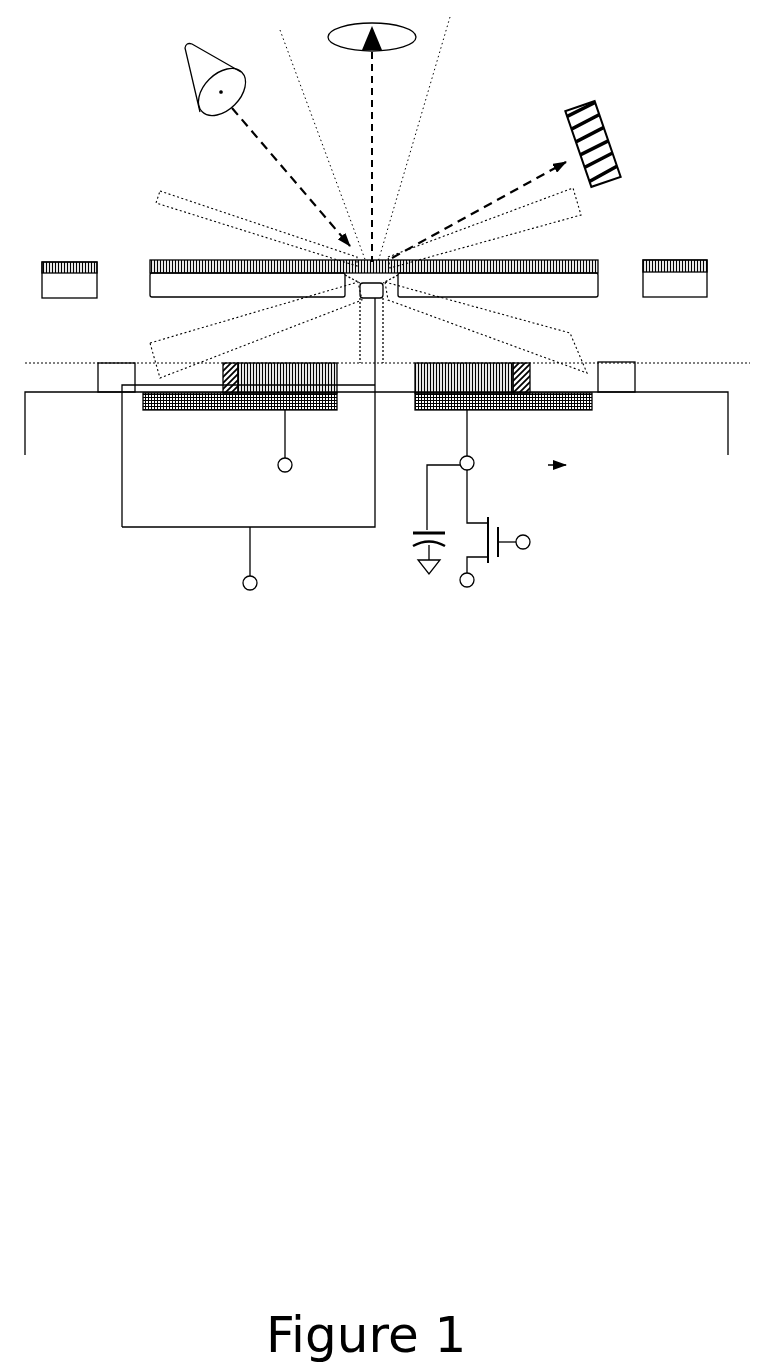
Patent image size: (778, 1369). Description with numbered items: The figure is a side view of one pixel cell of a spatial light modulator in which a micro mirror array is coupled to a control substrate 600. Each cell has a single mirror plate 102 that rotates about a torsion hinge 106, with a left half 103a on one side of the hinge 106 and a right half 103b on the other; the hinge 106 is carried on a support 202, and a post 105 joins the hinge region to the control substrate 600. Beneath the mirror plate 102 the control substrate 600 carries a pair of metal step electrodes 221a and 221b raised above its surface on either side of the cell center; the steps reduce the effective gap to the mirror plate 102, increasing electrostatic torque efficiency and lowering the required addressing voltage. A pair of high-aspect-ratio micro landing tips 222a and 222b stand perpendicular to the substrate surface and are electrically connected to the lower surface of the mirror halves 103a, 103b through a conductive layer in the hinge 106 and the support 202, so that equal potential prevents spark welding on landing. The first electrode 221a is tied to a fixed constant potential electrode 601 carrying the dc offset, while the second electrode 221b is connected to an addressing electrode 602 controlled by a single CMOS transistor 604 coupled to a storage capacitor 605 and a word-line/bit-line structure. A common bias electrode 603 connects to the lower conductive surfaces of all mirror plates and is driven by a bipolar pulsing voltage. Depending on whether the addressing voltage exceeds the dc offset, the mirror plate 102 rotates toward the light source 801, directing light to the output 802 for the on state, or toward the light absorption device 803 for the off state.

The mirror plate 102 is at (182, 257).
The left half of mirror plate 103a is at (148, 285).
The right half of mirror plate 103b is at (598, 282).
The hinge post 105 is at (392, 323).
The hinge 106 is at (356, 296).
The support 202 is at (96, 355).
The first metal step electrode 221a is at (250, 412).
The second metal step electrode 221b is at (603, 404).
The micro landing tip 222a is at (218, 370).
The micro landing tip 222b is at (540, 375).
The control substrate 600 is at (95, 435).
The fixed constant potential electrode 601 is at (300, 476).
The addressing electrode 602 is at (458, 454).
The common bias electrode 603 is at (242, 583).
The CMOS transistor 604 is at (515, 575).
The storage capacitor 605 is at (403, 537).
The light source 801 is at (181, 92).
The projection lens / output aperture 802 is at (414, 38).
The light absorption device 803 is at (572, 99).